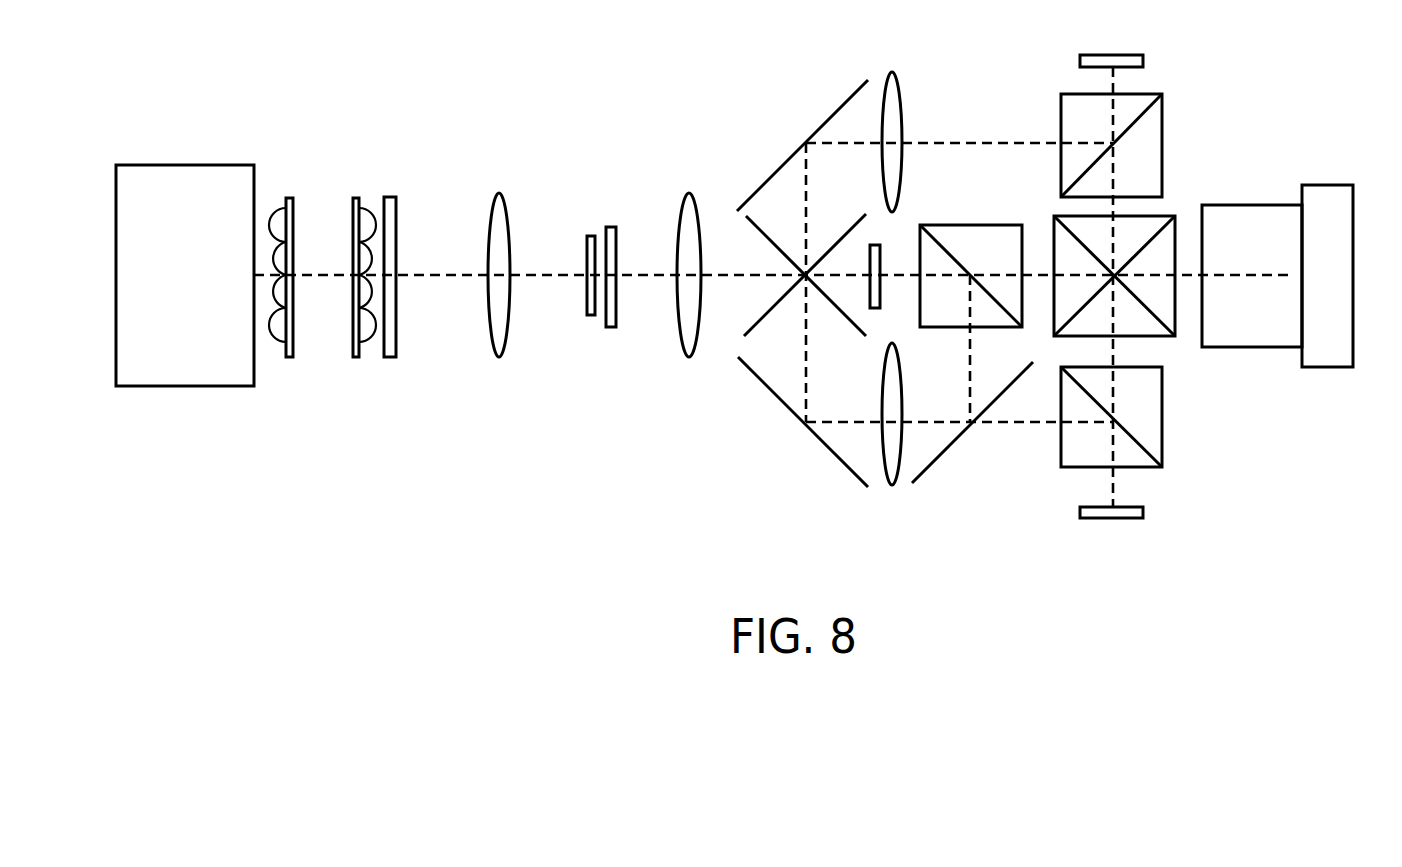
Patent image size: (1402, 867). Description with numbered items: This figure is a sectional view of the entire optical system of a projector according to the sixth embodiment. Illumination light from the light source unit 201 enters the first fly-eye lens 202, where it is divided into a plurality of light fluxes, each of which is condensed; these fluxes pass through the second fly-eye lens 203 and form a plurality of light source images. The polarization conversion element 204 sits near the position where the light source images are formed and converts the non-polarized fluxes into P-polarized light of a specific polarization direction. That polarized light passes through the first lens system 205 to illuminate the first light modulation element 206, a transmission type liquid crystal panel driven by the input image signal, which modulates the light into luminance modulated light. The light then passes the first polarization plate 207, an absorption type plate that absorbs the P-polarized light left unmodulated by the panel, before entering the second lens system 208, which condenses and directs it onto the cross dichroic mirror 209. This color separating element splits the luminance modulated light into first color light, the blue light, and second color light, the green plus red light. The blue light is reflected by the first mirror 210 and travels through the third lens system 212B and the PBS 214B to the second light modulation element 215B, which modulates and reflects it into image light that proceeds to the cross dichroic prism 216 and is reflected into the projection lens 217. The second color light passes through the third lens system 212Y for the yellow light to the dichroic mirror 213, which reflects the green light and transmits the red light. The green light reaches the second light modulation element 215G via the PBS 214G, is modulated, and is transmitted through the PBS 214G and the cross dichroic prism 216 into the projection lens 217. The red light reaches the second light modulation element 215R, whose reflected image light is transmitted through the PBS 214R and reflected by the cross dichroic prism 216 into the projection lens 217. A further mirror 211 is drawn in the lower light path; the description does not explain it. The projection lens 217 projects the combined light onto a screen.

The light source unit 201 is at (210, 182).
The first fly-eye lens 202 is at (288, 200).
The second fly-eye lens 203 is at (357, 200).
The polarization conversion element 204 is at (388, 204).
The first lens system 205 is at (500, 200).
The first light modulation element 206 is at (587, 238).
The first polarization plate 207 is at (613, 230).
The second lens system 208 is at (690, 325).
The cross dichroic mirror 209 is at (765, 238).
The first mirror 210 is at (827, 115).
The reflecting mirror 211 is at (785, 407).
The third lens system 212B is at (893, 90).
The third lens system 212Y is at (897, 468).
The dichroic mirror 213 is at (953, 440).
The PBS 214G is at (997, 240).
The PBS 214B is at (1152, 130).
The PBS 214R is at (1153, 443).
The second light modulation element 215B is at (1112, 55).
The second light modulation element 215G is at (885, 287).
The second light modulation element 215R is at (1102, 520).
The cross dichroic prism 216 is at (1163, 233).
The projection lens 217 is at (1223, 227).